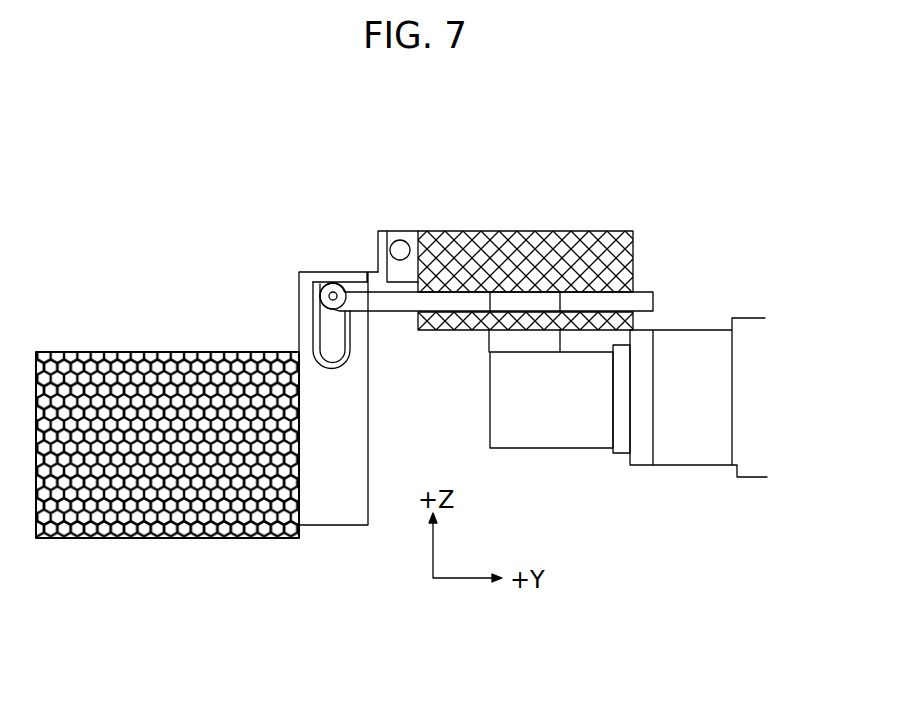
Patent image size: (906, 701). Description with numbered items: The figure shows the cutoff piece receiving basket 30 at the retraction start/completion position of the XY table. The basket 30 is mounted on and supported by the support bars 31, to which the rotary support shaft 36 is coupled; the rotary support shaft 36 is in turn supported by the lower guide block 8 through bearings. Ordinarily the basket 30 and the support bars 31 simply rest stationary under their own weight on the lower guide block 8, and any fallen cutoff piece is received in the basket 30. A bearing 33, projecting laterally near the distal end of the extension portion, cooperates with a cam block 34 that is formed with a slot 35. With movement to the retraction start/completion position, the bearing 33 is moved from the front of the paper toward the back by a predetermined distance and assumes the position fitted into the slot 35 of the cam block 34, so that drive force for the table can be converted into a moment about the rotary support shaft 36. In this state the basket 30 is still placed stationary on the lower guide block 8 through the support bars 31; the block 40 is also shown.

The lower guide block 8 is at (557, 437).
The cutoff piece receiving basket 30 is at (483, 237).
The support bars 31 is at (653, 302).
The bearing 33 is at (318, 297).
The cam block 34 is at (347, 422).
The slot 35 is at (340, 345).
The rotary support shaft 36 is at (400, 240).
The cushioning block 40 is at (180, 536).